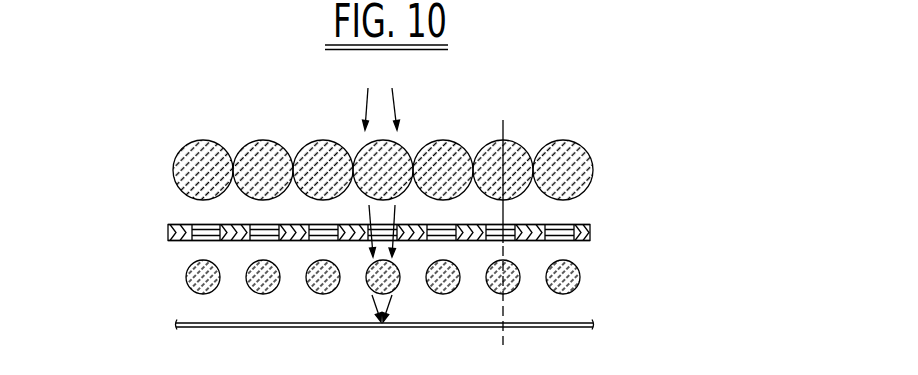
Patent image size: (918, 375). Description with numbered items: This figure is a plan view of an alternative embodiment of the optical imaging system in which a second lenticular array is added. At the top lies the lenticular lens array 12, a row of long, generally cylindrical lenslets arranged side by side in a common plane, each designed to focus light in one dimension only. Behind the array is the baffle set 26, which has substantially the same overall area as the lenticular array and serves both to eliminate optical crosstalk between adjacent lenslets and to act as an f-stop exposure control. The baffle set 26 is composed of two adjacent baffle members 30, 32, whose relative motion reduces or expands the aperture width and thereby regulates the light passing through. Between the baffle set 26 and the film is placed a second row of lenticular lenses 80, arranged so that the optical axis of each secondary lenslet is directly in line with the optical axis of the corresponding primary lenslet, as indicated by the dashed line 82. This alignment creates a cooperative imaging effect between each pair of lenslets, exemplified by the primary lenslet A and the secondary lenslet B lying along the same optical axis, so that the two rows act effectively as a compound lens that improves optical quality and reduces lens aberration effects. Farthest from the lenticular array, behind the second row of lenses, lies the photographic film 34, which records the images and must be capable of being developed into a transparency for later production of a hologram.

The lenticular lens array 12 is at (607, 166).
The dashed line 82 is at (503, 123).
The primary lenslet A is at (512, 142).
The baffle set 26 is at (592, 232).
The baffle member 32 is at (168, 225).
The baffle member 30 is at (168, 239).
The second row of lenticular lenses 80 is at (591, 274).
The secondary lenslet B is at (515, 283).
The photographic film 34 is at (260, 328).